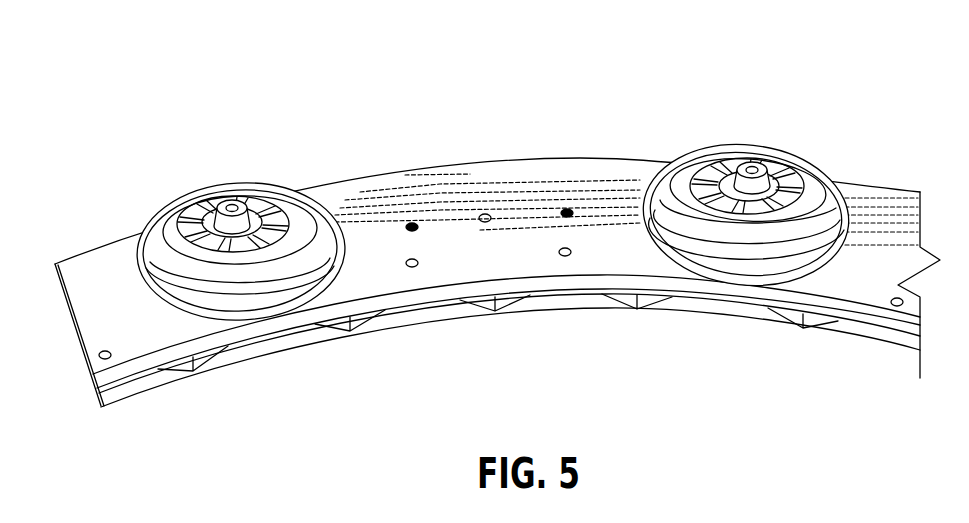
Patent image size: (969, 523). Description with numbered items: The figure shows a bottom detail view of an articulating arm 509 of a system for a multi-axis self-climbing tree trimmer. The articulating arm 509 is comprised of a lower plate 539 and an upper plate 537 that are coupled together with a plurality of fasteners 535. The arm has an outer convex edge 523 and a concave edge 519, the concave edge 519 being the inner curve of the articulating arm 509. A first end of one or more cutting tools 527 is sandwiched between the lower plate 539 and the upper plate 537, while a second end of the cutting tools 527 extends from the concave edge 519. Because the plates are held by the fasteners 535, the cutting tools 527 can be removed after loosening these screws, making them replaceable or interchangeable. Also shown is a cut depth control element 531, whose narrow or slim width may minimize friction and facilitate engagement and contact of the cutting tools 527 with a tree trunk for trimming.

The articulating arm 509 is at (196, 72).
The concave edge 519 is at (427, 318).
The convex edge 523 is at (530, 161).
The cutting tools 527 is at (637, 310).
The cut depth control element 531 is at (263, 184).
The fasteners 535 is at (99, 355).
The upper plate 537 is at (120, 392).
The lower plate 539 is at (98, 272).